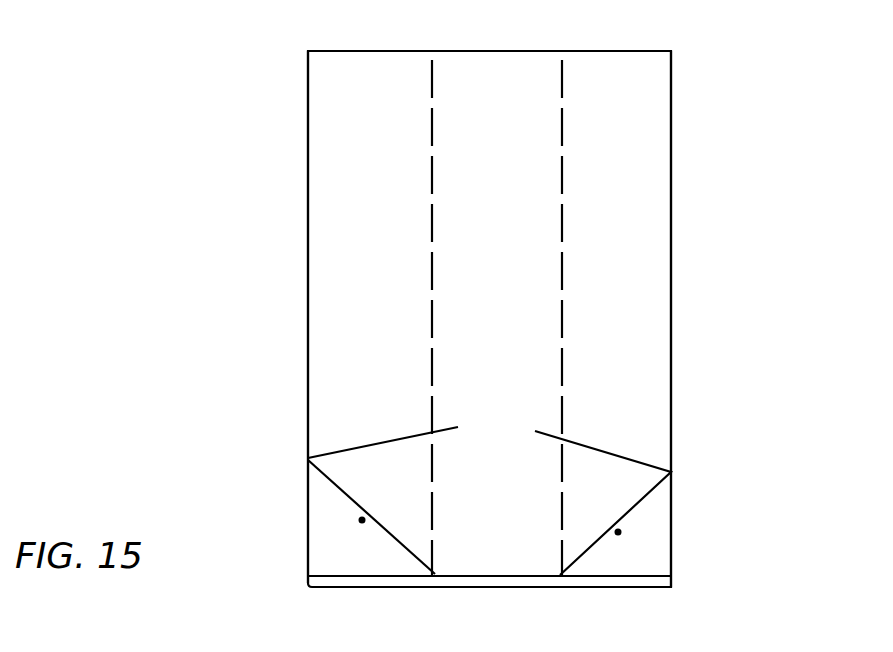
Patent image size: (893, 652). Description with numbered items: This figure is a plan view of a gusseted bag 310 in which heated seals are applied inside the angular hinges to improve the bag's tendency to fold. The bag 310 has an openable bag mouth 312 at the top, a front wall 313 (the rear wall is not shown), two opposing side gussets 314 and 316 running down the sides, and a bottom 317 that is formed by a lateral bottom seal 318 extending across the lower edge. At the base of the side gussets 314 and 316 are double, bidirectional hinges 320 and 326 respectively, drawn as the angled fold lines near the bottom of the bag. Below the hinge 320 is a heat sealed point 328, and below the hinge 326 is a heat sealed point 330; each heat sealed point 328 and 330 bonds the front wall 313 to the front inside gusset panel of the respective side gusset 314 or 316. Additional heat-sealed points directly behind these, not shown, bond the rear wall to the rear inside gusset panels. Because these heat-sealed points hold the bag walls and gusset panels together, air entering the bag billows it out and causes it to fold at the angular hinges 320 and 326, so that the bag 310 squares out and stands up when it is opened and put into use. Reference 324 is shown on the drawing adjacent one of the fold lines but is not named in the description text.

The bag 310 is at (671, 205).
The openable bag mouth 312 is at (513, 51).
The front wall 313 is at (528, 267).
The side gusset 314 is at (357, 289).
The side gusset 316 is at (625, 278).
The bottom 317 is at (467, 588).
The lateral bottom seal 318 is at (373, 578).
The bidirectional hinge 320 is at (338, 489).
The left fold line 324 is at (432, 383).
The bidirectional hinge 326 is at (650, 486).
The heat sealed point 328 is at (362, 520).
The heat sealed point 330 is at (618, 532).